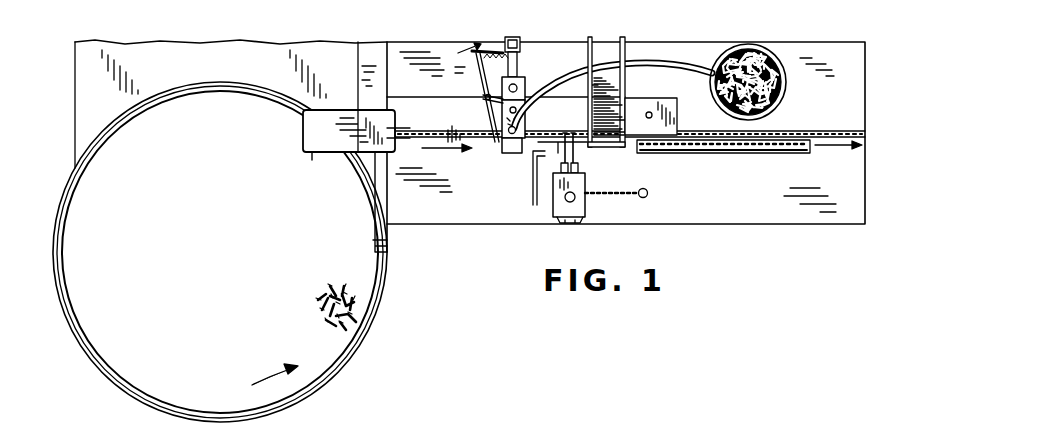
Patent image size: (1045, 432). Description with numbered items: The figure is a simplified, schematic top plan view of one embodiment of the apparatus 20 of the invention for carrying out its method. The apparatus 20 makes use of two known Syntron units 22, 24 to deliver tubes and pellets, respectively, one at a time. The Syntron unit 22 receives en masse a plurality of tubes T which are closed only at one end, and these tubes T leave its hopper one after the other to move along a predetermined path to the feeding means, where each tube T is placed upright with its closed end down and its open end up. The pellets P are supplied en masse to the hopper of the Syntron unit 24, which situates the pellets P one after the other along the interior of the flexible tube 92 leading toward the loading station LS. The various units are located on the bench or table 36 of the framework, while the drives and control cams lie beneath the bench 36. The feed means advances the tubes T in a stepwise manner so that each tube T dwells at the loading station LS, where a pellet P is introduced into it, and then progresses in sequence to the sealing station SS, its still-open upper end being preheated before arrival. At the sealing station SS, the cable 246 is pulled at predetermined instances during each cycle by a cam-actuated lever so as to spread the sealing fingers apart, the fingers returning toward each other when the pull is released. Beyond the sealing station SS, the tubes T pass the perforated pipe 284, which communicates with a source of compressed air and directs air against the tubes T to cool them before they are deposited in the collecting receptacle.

The apparatus 20 is at (466, 253).
The Syntron unit 22 is at (97, 372).
The Syntron unit 24 is at (696, 54).
The bench or table 36 is at (470, 146).
The flexible tube 92 is at (582, 72).
The cable 246 is at (616, 197).
The pipe 284 is at (618, 85).
The loading station LS is at (494, 166).
The sealing station SS is at (596, 162).
The pellet P is at (780, 97).
The tube T is at (314, 288).